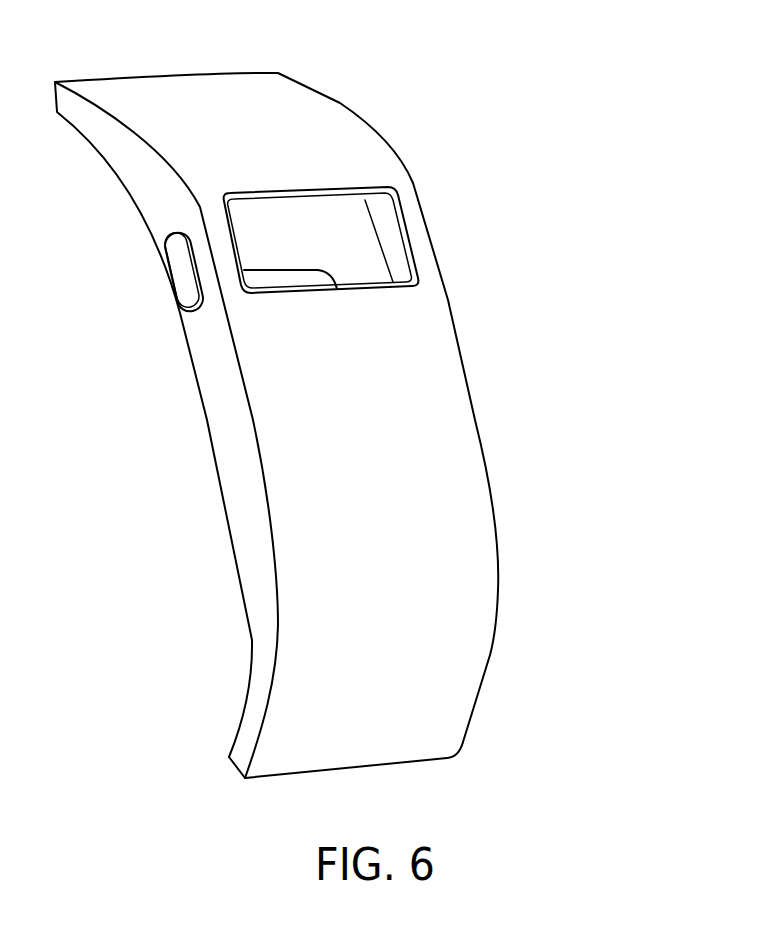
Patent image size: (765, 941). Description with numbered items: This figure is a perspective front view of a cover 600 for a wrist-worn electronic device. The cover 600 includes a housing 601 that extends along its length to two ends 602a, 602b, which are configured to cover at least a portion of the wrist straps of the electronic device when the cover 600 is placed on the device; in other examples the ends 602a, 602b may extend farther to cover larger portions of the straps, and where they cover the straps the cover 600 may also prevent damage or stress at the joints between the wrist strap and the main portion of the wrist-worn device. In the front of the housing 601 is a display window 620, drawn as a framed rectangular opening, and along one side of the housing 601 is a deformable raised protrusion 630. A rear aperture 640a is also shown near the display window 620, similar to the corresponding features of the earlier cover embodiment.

The cover 600 is at (493, 77).
The housing 601 is at (318, 163).
The end 602a is at (300, 70).
The end 602b is at (475, 745).
The display window 620 is at (410, 228).
The deformable raised protrusion 630 is at (182, 273).
The rear aperture 640a is at (338, 277).